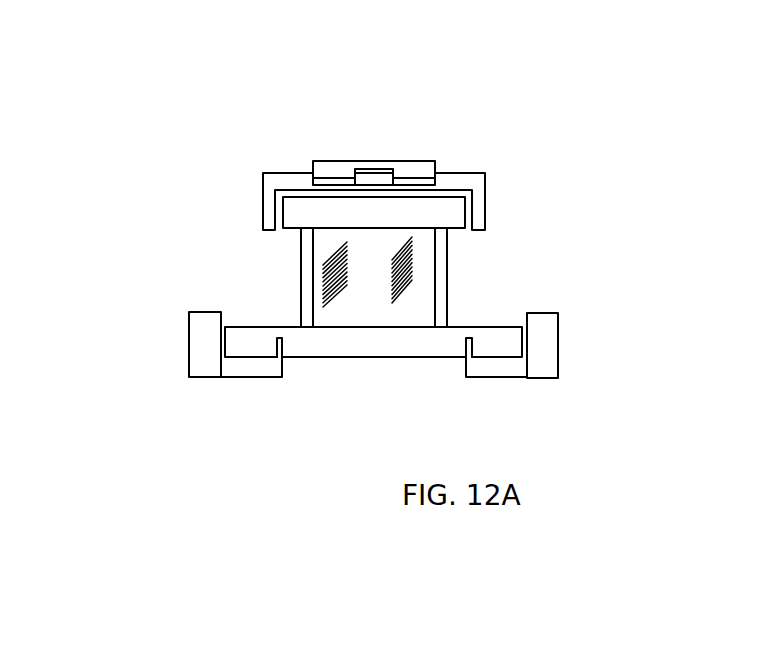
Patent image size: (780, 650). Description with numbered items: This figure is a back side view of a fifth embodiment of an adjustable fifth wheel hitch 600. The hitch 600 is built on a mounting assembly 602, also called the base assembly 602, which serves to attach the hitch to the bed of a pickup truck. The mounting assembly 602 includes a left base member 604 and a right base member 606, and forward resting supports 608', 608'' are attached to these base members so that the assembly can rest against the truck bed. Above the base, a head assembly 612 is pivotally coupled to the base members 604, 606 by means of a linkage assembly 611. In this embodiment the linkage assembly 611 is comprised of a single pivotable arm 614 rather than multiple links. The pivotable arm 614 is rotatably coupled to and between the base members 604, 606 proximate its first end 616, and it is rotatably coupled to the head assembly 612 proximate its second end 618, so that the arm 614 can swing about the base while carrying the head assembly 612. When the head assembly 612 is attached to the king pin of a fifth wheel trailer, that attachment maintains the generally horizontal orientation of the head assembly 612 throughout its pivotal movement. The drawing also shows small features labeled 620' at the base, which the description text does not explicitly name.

The adjustable fifth wheel hitch 600 is at (540, 186).
The mounting assembly 602 is at (598, 316).
The left base member 604 is at (558, 360).
The right base member 606 is at (190, 341).
The forward resting support 608' is at (528, 402).
The forward resting support 608'' is at (242, 412).
The linkage assembly 611 is at (468, 247).
The head assembly 612 is at (243, 168).
The pivotable arm 614 is at (413, 290).
The first end 616 is at (381, 335).
The second end 618 is at (303, 216).
The locating tabs 620' is at (376, 412).